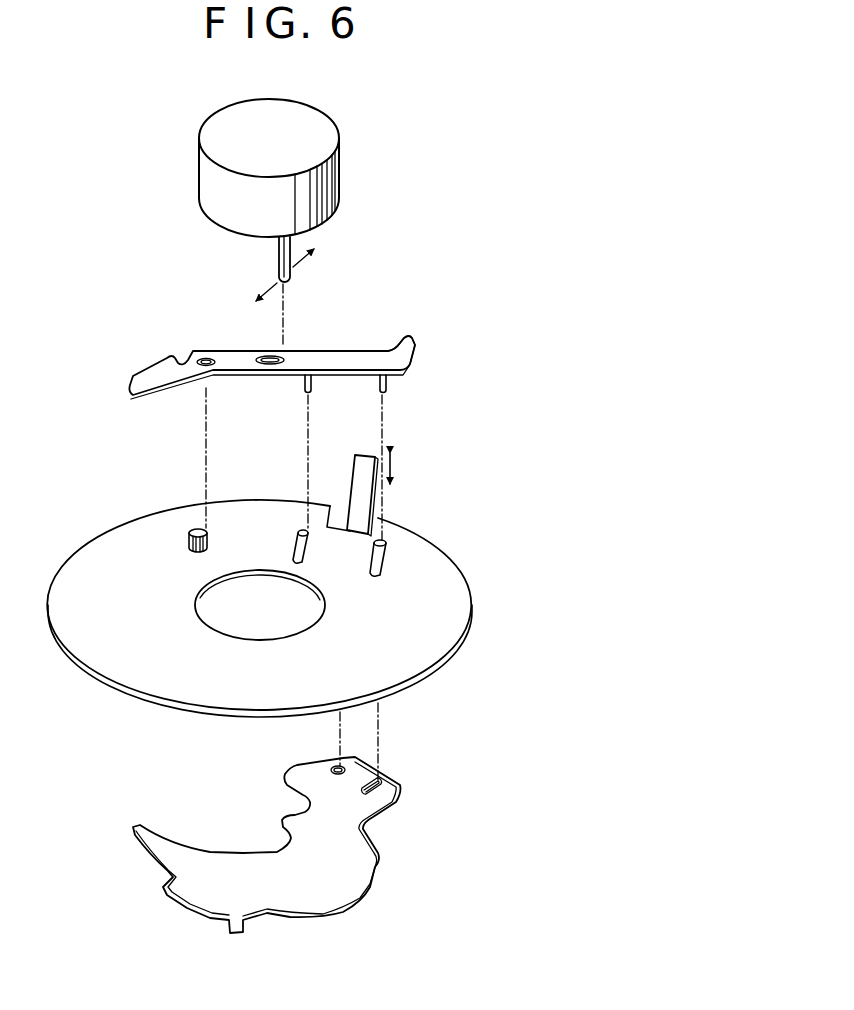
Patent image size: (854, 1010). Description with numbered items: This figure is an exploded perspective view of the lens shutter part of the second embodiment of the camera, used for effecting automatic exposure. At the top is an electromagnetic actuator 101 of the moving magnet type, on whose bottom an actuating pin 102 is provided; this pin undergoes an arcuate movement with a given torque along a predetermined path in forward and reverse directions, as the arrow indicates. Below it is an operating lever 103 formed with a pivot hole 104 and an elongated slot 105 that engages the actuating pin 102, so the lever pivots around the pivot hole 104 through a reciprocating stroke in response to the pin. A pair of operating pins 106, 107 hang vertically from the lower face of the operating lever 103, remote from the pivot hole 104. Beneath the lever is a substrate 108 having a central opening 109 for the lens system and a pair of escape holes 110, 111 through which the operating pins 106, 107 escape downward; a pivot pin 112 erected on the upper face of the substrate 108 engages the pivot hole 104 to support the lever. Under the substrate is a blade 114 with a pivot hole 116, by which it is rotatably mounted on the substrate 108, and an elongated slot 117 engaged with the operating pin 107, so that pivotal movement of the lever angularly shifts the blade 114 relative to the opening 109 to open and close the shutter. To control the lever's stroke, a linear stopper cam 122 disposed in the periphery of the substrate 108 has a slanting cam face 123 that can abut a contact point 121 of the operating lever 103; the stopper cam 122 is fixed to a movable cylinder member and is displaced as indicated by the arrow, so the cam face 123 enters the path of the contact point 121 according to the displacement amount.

The electromagnetic actuator 101 is at (332, 134).
The actuating pin 102 is at (293, 249).
The operating lever 103 is at (133, 388).
The pivot hole 104 is at (203, 358).
The elongated slot 105 is at (268, 357).
The operating pin 106 is at (303, 386).
The operating pin 107 is at (390, 389).
The substrate 108 is at (287, 564).
The central opening 109 is at (313, 617).
The escape hole 110 is at (295, 558).
The escape hole 111 is at (385, 558).
The pivot pin 112 is at (190, 537).
The blade 114 is at (291, 818).
The pivot hole 116 is at (343, 765).
The elongated slot 117 is at (382, 787).
The contact point 121 is at (399, 345).
The linear stopper cam 122 is at (375, 512).
The slanting cam face 123 is at (365, 462).